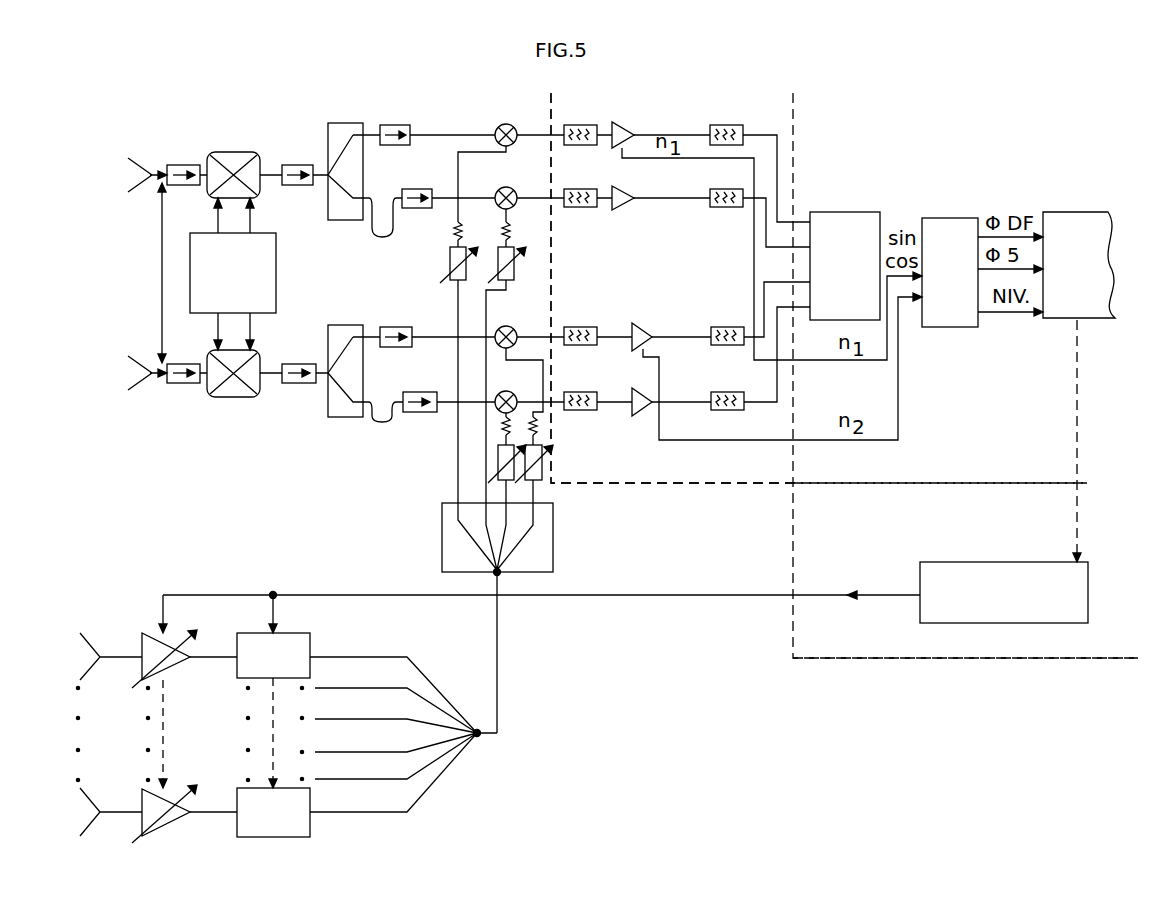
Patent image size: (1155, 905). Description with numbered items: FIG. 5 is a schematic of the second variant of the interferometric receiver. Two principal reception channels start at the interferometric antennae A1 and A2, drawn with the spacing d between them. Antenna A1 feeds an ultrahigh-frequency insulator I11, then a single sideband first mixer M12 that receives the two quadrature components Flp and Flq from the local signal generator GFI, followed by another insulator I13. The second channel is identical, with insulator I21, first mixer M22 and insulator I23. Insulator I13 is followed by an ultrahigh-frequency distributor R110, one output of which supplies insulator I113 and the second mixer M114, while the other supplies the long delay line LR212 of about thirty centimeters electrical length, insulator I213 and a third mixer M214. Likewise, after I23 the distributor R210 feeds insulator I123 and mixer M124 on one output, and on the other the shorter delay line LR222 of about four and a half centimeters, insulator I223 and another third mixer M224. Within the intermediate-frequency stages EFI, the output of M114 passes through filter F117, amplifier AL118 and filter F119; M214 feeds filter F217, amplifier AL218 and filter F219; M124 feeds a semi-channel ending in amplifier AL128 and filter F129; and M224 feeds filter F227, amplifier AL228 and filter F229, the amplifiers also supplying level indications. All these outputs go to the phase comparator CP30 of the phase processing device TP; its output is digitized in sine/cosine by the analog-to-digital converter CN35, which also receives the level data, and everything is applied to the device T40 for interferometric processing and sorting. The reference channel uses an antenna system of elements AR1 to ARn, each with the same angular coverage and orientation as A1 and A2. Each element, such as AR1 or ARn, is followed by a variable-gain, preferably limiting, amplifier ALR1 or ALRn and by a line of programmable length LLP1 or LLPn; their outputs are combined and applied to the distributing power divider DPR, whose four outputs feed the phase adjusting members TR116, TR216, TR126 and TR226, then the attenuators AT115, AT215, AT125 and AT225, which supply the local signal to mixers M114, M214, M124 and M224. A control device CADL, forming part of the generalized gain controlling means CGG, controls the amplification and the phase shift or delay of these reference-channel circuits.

The spiral antenna A1 is at (153, 165).
The antenna A2 is at (153, 358).
The antenna spacing d is at (154, 273).
The ultrahigh-frequency insulator I11 is at (183, 165).
The ultrahigh-frequency insulator I13 is at (298, 165).
The insulator I113 is at (398, 125).
The ultrahigh-frequency insulator I213 is at (425, 189).
The ultrahigh-frequency insulator I21 is at (183, 383).
The ultrahigh-frequency insulator I23 is at (300, 364).
The insulator I123 is at (390, 327).
The insulator I223 is at (408, 392).
The single sideband mixer M12 is at (238, 152).
The first mixer M22 is at (236, 397).
The second mixer M114 is at (506, 124).
The third mixer M214 is at (520, 180).
The mixer M124 is at (522, 317).
The third mixer M224 is at (522, 386).
The ultrahigh-frequency distributor R110 is at (348, 123).
The distributor R210 is at (340, 325).
The delay line LR212 is at (364, 226).
The delay line LR222 is at (364, 424).
The local signal generator GFI is at (276, 273).
The local signal component FIp Flp is at (215, 225).
The local signal component FIq Flq is at (253, 225).
The filter F117 is at (578, 125).
The filter F217 is at (580, 189).
The filter F119 is at (736, 125).
The filter F219 is at (725, 207).
The filter F227 is at (580, 392).
The filter F129 is at (733, 345).
The filter F229 is at (726, 410).
The amplifier AL118 is at (625, 125).
The amplifier AL218 is at (625, 190).
The amplifier AL128 is at (637, 323).
The amplifier AL228 is at (640, 417).
The attenuator AT115 is at (452, 231).
The attenuator AT215 is at (512, 231).
The attenuator AT225 is at (500, 428).
The attenuator AT125 is at (540, 427).
The phase adjusting member TR116 is at (448, 275).
The phase adjusting member TR216 is at (518, 267).
The phase adjusting member TR226 is at (498, 460).
The phase adjusting member TR126 is at (545, 465).
The distributing power divider DPR is at (442, 545).
The phase comparator CP30 is at (852, 212).
The analog-to-digital converter CN35 is at (945, 218).
The interferometric processing and sorting device T40 is at (1075, 220).
The amplification and delay control device CADL is at (1028, 568).
The intermediate-frequency stages EFI is at (728, 485).
The phase processing device TP is at (921, 487).
The generalized gain controlling means CGG is at (933, 660).
The antenna element AR1 is at (92, 656).
The antenna element ARn is at (91, 812).
The variable-gain amplifier ALR1 is at (176, 663).
The variable-gain amplifier ALRn is at (176, 818).
The line with programmable length LLP1 is at (250, 655).
The line with programmable length LLPn is at (250, 812).